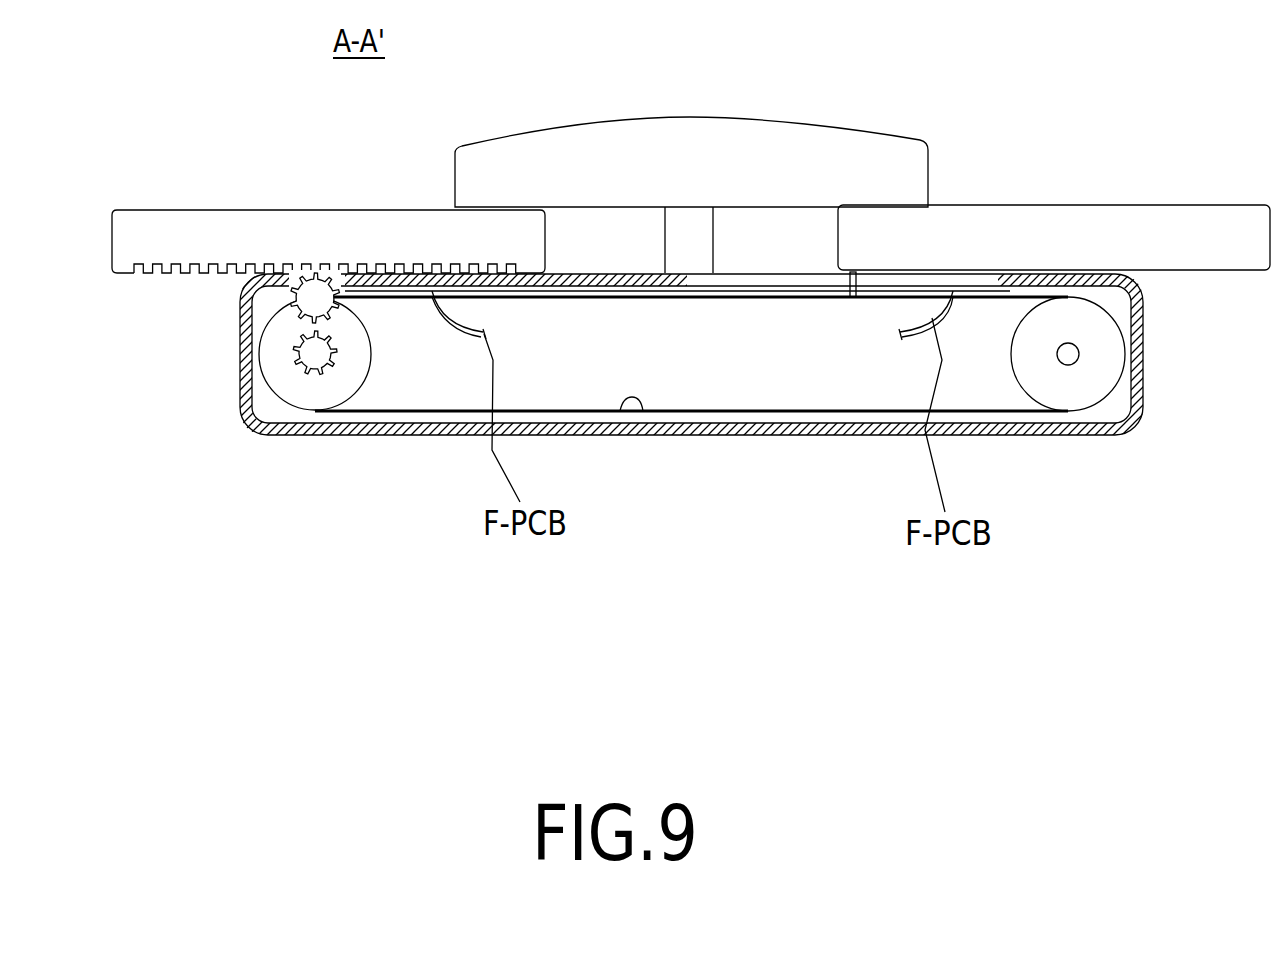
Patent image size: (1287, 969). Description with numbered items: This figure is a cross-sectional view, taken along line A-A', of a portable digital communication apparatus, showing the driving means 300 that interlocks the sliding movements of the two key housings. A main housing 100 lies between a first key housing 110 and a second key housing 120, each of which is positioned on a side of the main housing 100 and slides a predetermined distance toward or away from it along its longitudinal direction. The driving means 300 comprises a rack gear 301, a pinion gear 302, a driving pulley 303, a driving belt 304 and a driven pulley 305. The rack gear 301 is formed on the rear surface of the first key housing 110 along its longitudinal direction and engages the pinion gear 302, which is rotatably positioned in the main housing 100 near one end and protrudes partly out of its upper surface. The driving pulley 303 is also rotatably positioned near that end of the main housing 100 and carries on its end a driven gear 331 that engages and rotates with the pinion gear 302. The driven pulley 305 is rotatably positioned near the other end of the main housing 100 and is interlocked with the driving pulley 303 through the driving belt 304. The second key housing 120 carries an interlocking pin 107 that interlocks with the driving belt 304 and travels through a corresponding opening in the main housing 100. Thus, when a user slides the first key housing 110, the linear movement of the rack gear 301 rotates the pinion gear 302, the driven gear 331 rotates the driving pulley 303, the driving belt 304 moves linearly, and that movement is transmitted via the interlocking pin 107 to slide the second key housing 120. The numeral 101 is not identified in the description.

The main housing 100 is at (1162, 388).
The belt 101 is at (764, 299).
The interlocking pin 107 is at (855, 299).
The first key housing 110 is at (267, 192).
The second key housing 120 is at (1115, 190).
The driving means 300 is at (324, 324).
The rack gear 301 is at (180, 277).
The pinion gear 302 is at (320, 270).
The driving pulley 303 is at (318, 398).
The driving belt 304 is at (641, 413).
The driven pulley 305 is at (1070, 392).
The driven gear 331 is at (293, 357).